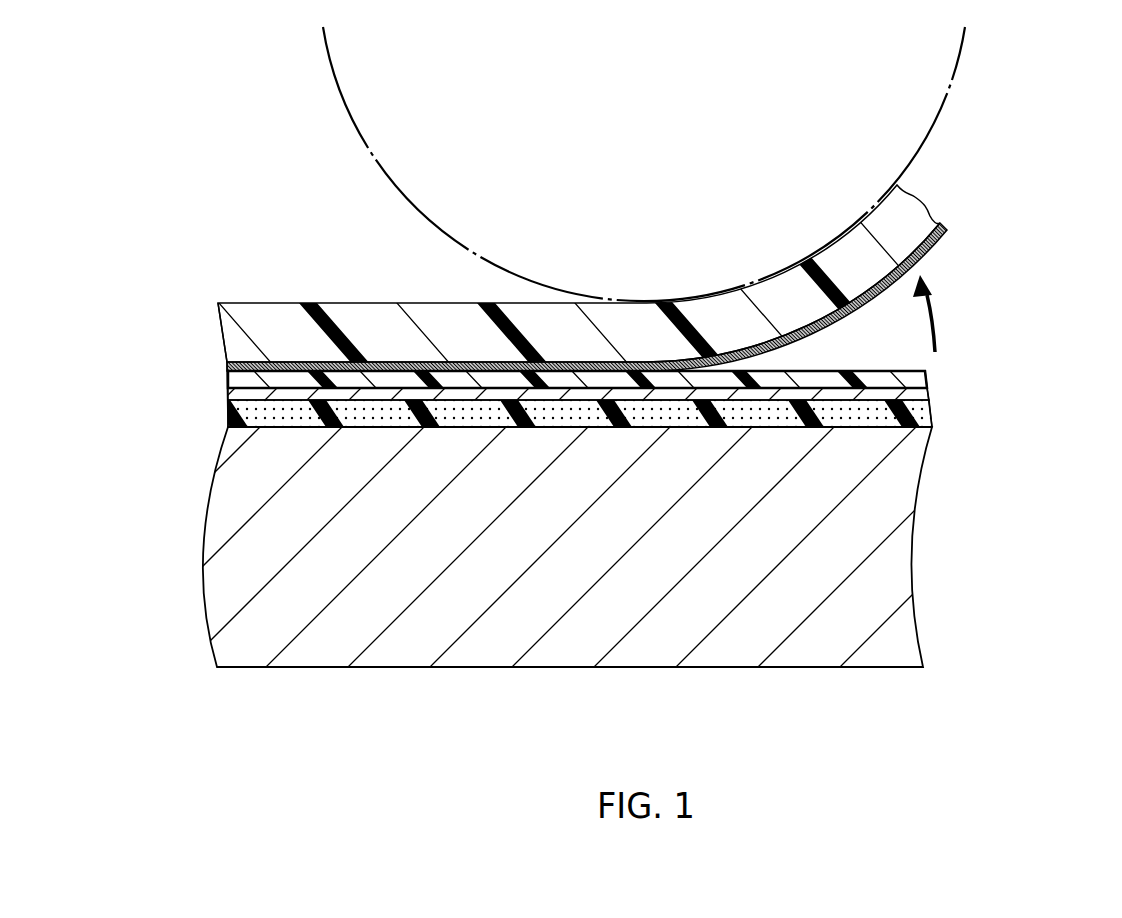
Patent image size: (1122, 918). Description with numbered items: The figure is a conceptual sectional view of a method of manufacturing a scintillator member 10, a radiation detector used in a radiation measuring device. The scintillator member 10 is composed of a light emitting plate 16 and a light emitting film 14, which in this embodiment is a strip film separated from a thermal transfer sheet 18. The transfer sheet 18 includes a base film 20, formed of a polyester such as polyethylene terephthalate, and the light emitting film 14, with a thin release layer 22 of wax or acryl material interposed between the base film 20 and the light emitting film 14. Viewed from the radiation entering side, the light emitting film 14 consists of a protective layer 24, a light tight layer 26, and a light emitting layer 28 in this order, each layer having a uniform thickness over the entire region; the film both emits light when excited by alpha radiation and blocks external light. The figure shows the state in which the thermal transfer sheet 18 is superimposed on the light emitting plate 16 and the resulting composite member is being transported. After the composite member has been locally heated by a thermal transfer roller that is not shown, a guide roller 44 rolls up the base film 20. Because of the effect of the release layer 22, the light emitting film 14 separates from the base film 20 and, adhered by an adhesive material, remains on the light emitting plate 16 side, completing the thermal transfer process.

The scintillator member 10 is at (561, 451).
The light emitting film 14 is at (598, 331).
The light emitting plate 16 is at (190, 667).
The thermal transfer sheet 18 is at (558, 298).
The base film 20 is at (225, 333).
The release layer 22 is at (226, 367).
The protective layer 24 is at (923, 376).
The light tight layer 26 is at (925, 397).
The light emitting layer 28 is at (930, 418).
The guide roller 44 is at (363, 137).